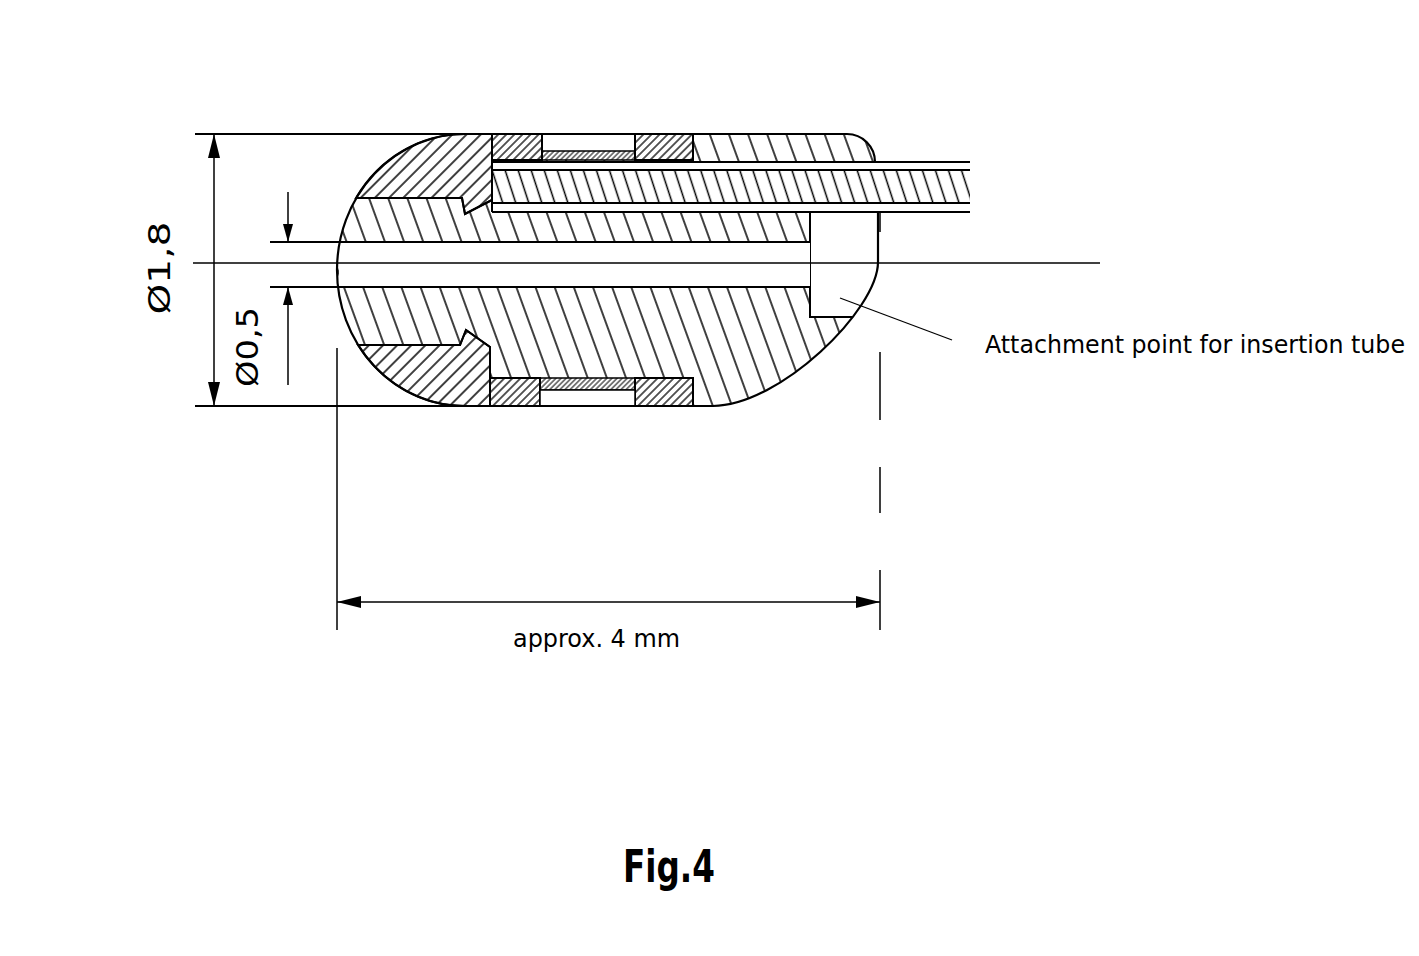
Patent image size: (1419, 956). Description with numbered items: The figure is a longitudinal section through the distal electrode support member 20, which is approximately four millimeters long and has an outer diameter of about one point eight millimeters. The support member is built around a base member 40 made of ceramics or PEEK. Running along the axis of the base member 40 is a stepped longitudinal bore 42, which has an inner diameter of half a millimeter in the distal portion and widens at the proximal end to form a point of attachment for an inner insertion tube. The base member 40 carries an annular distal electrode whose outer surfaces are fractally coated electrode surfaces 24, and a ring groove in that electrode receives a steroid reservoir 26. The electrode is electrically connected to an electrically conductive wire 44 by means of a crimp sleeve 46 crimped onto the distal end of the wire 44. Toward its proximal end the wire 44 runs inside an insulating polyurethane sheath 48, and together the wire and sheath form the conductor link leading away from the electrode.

The distal electrode support member 20 is at (180, 534).
The fractally coated electrode surfaces 24 is at (502, 410).
The steroid reservoir 26 is at (632, 410).
The base member 40 is at (747, 355).
The stepped longitudinal bore 42 is at (340, 242).
The electrically conductive wire 44 is at (880, 180).
The crimp sleeve 46 is at (655, 133).
The insulating polyurethane sheath 48 is at (970, 166).